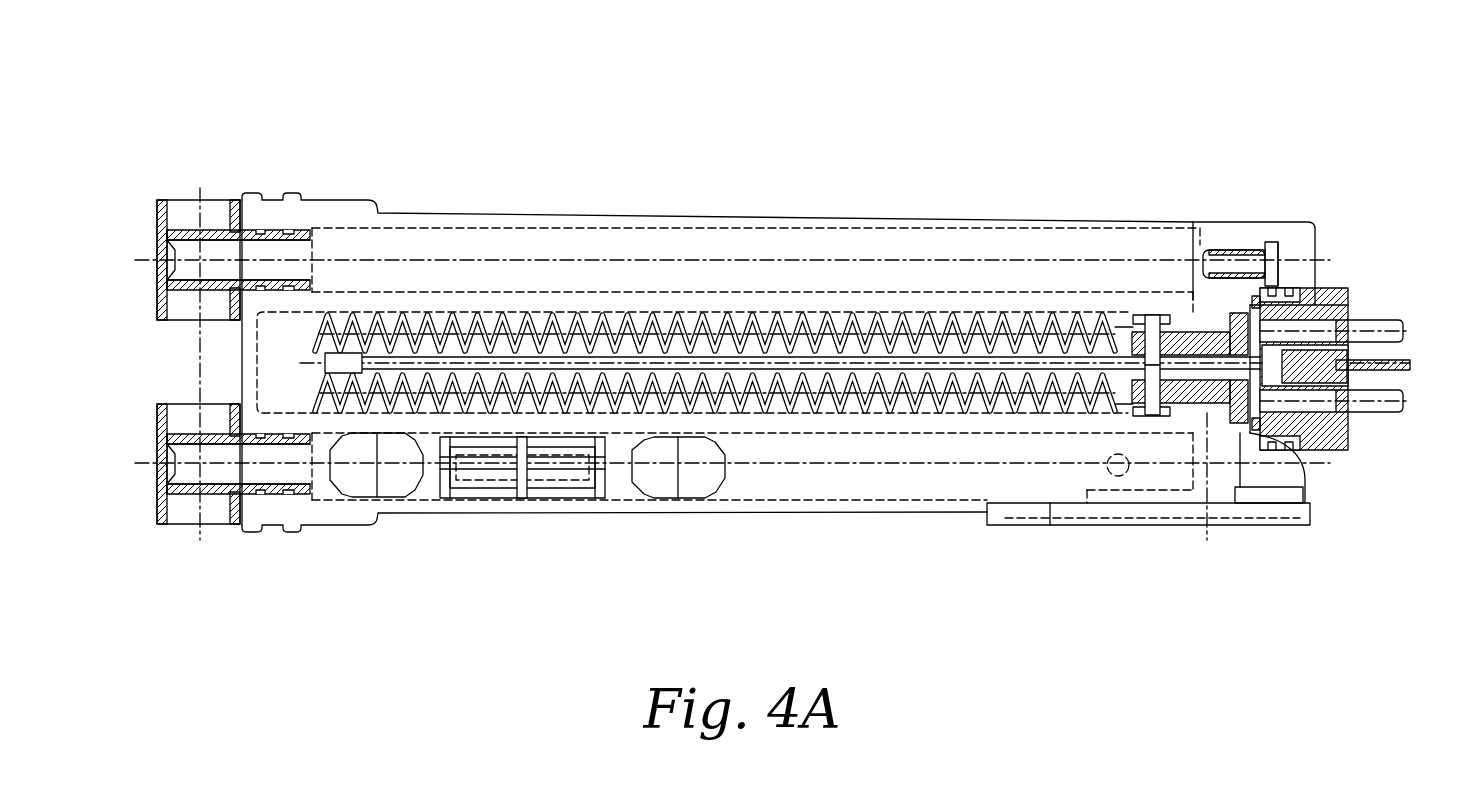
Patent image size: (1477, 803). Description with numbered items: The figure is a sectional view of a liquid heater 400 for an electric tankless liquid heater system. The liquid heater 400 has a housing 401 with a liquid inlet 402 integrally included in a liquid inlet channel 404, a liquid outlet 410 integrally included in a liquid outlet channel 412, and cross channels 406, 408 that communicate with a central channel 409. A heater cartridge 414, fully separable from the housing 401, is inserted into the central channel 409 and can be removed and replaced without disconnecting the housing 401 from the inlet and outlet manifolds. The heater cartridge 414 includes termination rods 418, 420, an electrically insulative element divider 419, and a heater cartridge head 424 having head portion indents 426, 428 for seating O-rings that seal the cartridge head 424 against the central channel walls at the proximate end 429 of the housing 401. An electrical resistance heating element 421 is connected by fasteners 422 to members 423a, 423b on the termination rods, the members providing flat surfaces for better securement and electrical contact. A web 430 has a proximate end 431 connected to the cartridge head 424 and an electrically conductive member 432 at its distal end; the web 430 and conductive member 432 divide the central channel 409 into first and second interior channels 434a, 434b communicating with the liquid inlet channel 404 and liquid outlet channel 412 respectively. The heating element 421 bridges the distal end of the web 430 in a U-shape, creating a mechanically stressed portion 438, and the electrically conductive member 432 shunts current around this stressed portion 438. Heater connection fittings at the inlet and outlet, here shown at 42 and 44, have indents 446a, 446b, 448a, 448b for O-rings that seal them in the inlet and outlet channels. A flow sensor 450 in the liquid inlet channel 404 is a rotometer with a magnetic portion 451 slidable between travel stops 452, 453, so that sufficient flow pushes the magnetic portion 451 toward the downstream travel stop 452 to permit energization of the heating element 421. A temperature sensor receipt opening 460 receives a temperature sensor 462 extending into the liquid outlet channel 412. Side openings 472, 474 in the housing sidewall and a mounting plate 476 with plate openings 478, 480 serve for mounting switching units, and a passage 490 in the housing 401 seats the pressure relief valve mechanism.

The liquid heater 400 is at (908, 80).
The housing 401 is at (675, 213).
The liquid inlet 402 is at (247, 463).
The liquid inlet channel 404 is at (788, 460).
The cross channel 406 is at (1217, 440).
The cross channel 408 is at (1207, 298).
The central channel 409 is at (692, 362).
The liquid outlet 410 is at (237, 257).
The liquid outlet channel 412 is at (616, 260).
The heater cartridge 414 is at (1376, 297).
The termination rod 418 is at (1405, 330).
The electrically insulative element divider 419 is at (1410, 365).
The termination rod 420 is at (1403, 401).
The electrical resistance heating element 421 is at (752, 318).
The fasteners 422 is at (1135, 316).
The member 423a is at (1152, 418).
The member 423b is at (1283, 297).
The heater cartridge head 424 is at (1350, 430).
The head portion indent 426 is at (1337, 288).
The head portion indent 428 is at (1300, 290).
The proximate end 429 is at (1254, 428).
The web 430 is at (433, 352).
The proximate end 431 is at (1196, 348).
The electrically conductive member 432 is at (330, 367).
The first interior channel 434a is at (925, 415).
The second interior channel 434b is at (500, 322).
The mechanically stressed portion 438 is at (298, 367).
The lower fiber connector 42 is at (160, 496).
The upper fiber connector 44 is at (160, 289).
The indent 446a is at (263, 532).
The indent 446b is at (263, 232).
The indent 448a is at (303, 532).
The indent 448b is at (292, 232).
The flow sensor 450 is at (570, 578).
The magnetic portion 451 is at (547, 490).
The downstream travel stop 452 is at (690, 483).
The travel stop 453 is at (390, 487).
The temperature sensor receipt opening 460 is at (1293, 242).
The temperature sensor 462 is at (1213, 290).
The side opening 472 is at (1068, 508).
The side opening 474 is at (1245, 530).
The mounting plate 476 is at (1298, 526).
The plate opening 478 is at (1053, 510).
The plate opening 480 is at (1203, 505).
The passage 490 is at (1106, 463).